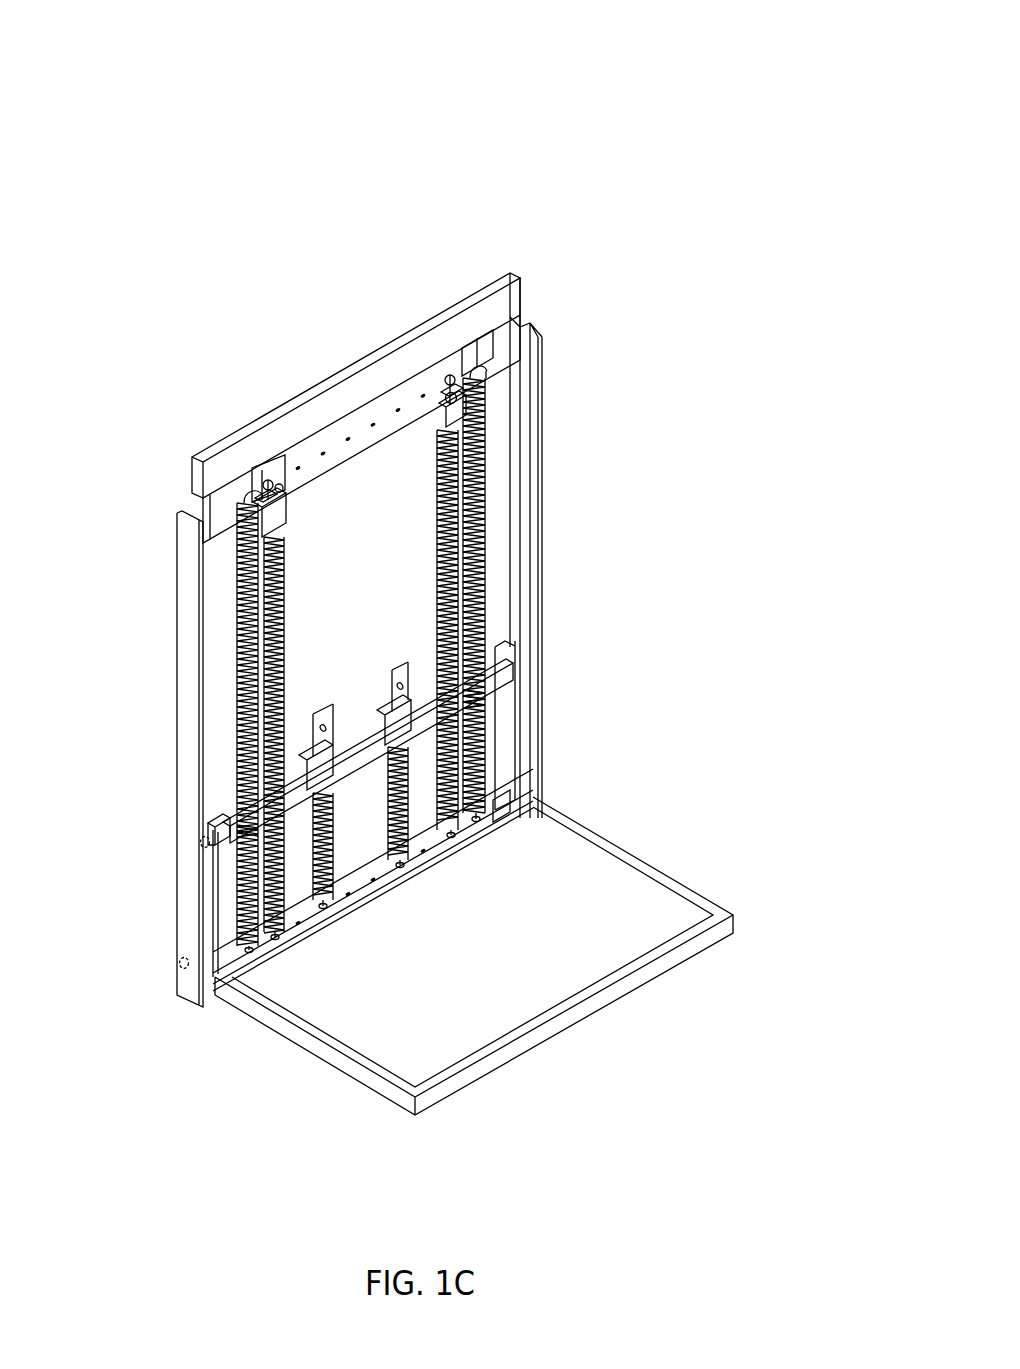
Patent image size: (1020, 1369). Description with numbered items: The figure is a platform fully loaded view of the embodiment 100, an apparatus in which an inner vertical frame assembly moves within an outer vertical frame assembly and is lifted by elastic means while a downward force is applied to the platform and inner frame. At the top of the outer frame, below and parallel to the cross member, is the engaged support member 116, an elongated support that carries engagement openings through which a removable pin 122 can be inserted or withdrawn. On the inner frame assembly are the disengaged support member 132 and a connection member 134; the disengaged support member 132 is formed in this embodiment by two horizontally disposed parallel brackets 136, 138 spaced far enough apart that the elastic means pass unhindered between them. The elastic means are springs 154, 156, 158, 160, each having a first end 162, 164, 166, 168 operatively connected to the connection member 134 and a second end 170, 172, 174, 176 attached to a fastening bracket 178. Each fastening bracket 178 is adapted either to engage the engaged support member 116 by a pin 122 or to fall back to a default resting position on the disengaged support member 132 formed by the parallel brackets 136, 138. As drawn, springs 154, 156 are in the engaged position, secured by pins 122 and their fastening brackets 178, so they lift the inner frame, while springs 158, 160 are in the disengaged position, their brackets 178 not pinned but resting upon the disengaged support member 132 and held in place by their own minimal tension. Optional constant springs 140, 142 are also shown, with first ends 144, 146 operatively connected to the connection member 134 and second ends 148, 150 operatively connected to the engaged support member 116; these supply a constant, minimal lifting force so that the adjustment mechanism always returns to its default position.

The embodiment 100 is at (692, 160).
The engaged support member 116 is at (476, 348).
The removable pin 122 is at (448, 376).
The disengaged support member 132 is at (501, 692).
The connection member 134 is at (367, 887).
The horizontally disposed parallel bracket 136 is at (230, 820).
The horizontally disposed parallel bracket 138 is at (225, 830).
The constant spring 140 is at (240, 640).
The constant spring 142 is at (486, 527).
The first end of constant spring 144 is at (250, 953).
The first end of constant spring 146 is at (480, 823).
The second end of constant spring 148 is at (240, 527).
The second end of constant spring 150 is at (477, 388).
The spring 154 is at (283, 610).
The spring 156 is at (240, 877).
The spring 158 is at (403, 775).
The spring 160 is at (455, 552).
The first end of spring 162 is at (274, 939).
The first end of spring 164 is at (325, 908).
The first end of spring 166 is at (401, 867).
The first end of spring 168 is at (452, 838).
The second end of spring 170 is at (262, 497).
The second end of spring 172 is at (322, 757).
The second end of spring 174 is at (490, 650).
The second end of spring 176 is at (447, 395).
The fastening bracket 178 is at (442, 422).